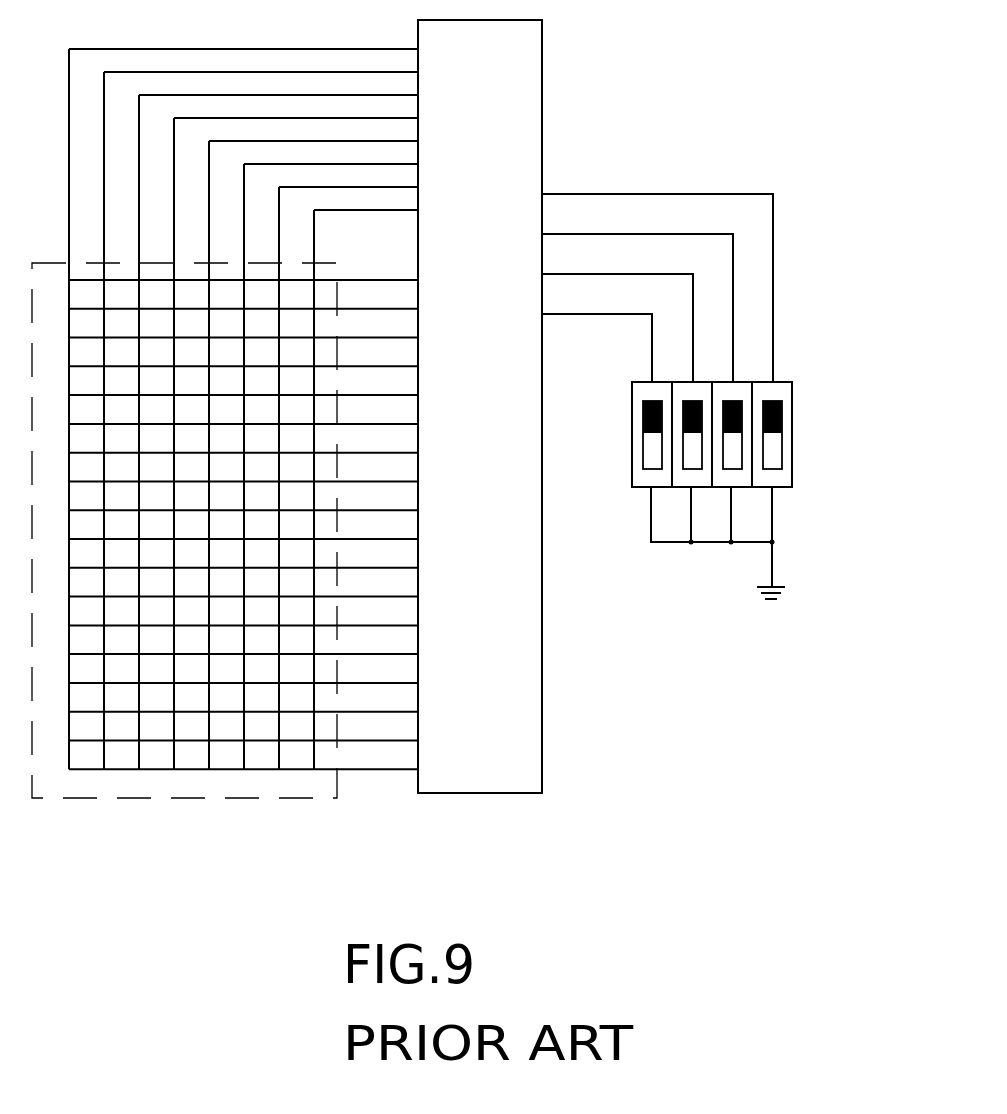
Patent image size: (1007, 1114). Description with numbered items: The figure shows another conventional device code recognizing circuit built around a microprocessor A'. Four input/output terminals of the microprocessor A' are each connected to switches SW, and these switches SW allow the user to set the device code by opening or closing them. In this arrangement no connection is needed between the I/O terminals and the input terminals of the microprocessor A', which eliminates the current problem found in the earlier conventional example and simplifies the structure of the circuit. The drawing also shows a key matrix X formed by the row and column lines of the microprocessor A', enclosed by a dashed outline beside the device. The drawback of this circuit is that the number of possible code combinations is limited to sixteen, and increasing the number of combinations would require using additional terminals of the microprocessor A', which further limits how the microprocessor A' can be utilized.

The microprocessor A' is at (527, 404).
The key matrix X is at (162, 798).
The switches SW is at (782, 392).